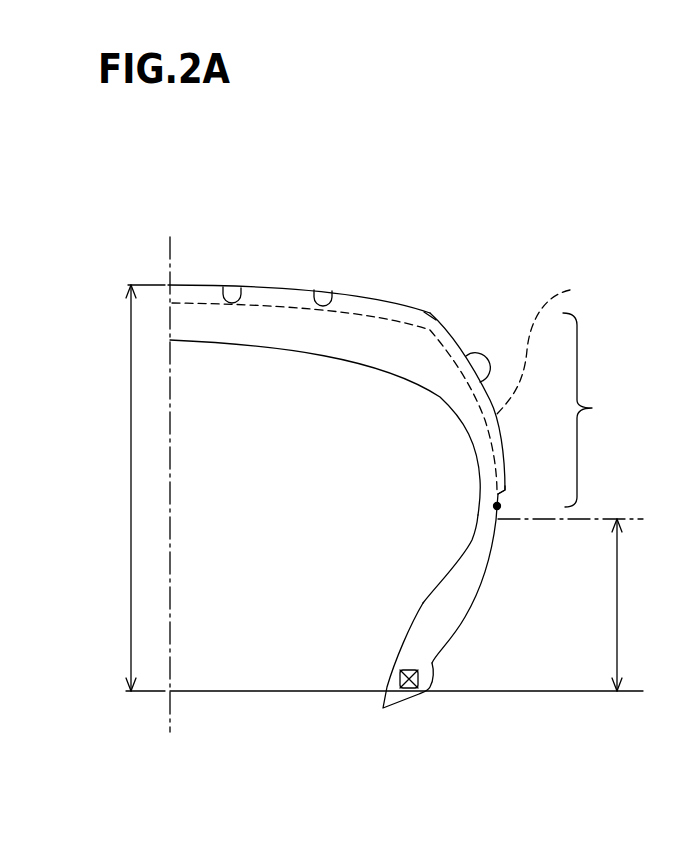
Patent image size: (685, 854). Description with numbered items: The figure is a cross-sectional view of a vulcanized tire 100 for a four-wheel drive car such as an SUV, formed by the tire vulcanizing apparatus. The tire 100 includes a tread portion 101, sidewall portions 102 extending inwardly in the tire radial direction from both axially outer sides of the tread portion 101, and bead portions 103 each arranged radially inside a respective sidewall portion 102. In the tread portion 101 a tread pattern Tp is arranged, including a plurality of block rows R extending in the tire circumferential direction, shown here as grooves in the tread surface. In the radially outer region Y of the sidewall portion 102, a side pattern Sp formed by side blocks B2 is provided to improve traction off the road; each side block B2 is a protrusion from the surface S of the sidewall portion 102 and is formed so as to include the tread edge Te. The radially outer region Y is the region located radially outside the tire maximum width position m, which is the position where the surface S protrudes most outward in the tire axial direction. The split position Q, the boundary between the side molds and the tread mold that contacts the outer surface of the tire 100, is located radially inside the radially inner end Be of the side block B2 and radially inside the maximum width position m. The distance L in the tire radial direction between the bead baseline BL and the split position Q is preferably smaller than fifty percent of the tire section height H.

The tire 100 is at (448, 252).
The tread portion 101 is at (298, 279).
The sidewall portion 102 is at (504, 534).
The bead portion 103 is at (456, 645).
The block row R is at (197, 283).
The tread pattern Tp is at (229, 278).
The tread edge Te is at (433, 312).
The side pattern Sp is at (498, 381).
The surface of sidewall portion S is at (544, 343).
The radially outer region Y is at (591, 410).
The side block B2 is at (483, 380).
The radially inner end of side block Be is at (512, 493).
The tire maximum width position m is at (493, 508).
The split position Q is at (583, 519).
The distance between bead baseline and split position L is at (629, 605).
The tire section height H is at (116, 488).
The bead baseline BL is at (508, 693).